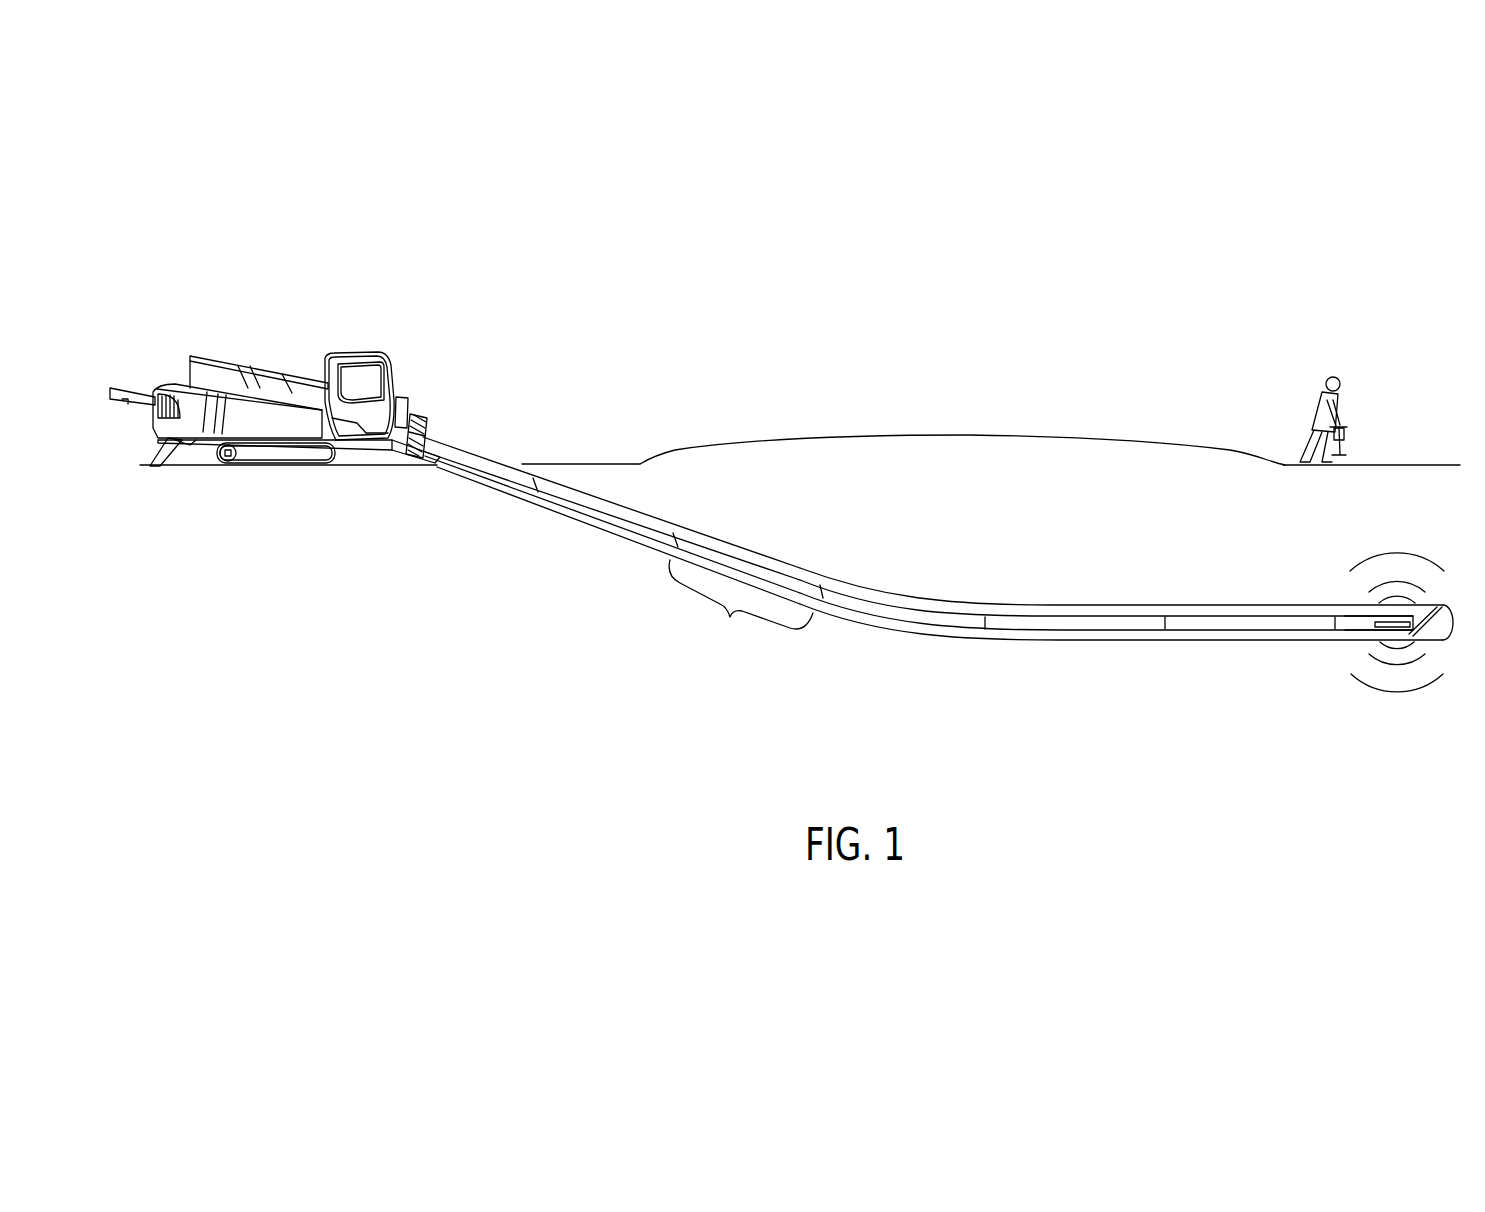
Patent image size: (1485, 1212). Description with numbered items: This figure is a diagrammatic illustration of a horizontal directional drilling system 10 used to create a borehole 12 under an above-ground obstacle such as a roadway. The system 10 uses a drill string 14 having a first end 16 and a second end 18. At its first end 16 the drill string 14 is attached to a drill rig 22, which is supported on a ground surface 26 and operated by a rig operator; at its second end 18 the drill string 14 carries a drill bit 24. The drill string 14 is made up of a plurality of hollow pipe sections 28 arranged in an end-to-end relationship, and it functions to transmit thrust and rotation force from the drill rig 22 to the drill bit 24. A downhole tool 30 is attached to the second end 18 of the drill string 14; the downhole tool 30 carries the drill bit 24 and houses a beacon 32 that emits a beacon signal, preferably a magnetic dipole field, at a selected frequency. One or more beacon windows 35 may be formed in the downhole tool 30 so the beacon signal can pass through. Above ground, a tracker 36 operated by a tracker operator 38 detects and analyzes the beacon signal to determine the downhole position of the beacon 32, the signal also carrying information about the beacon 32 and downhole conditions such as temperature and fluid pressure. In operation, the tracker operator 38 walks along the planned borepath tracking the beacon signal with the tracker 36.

The horizontal directional drilling system 10 is at (886, 311).
The borehole 12 is at (1093, 641).
The drill string 14 is at (588, 486).
The first end 16 is at (423, 433).
The second end 18 is at (1337, 618).
The drill rig 22 is at (362, 353).
The drill bit 24 is at (1418, 633).
The ground surface 26 is at (968, 435).
The hollow pipe sections 28 is at (678, 565).
The downhole tool 30 is at (1382, 615).
The beacon 32 is at (1370, 690).
The beacon window 35 is at (1380, 625).
The tracker 36 is at (1340, 423).
The tracker operator 38 is at (1327, 390).